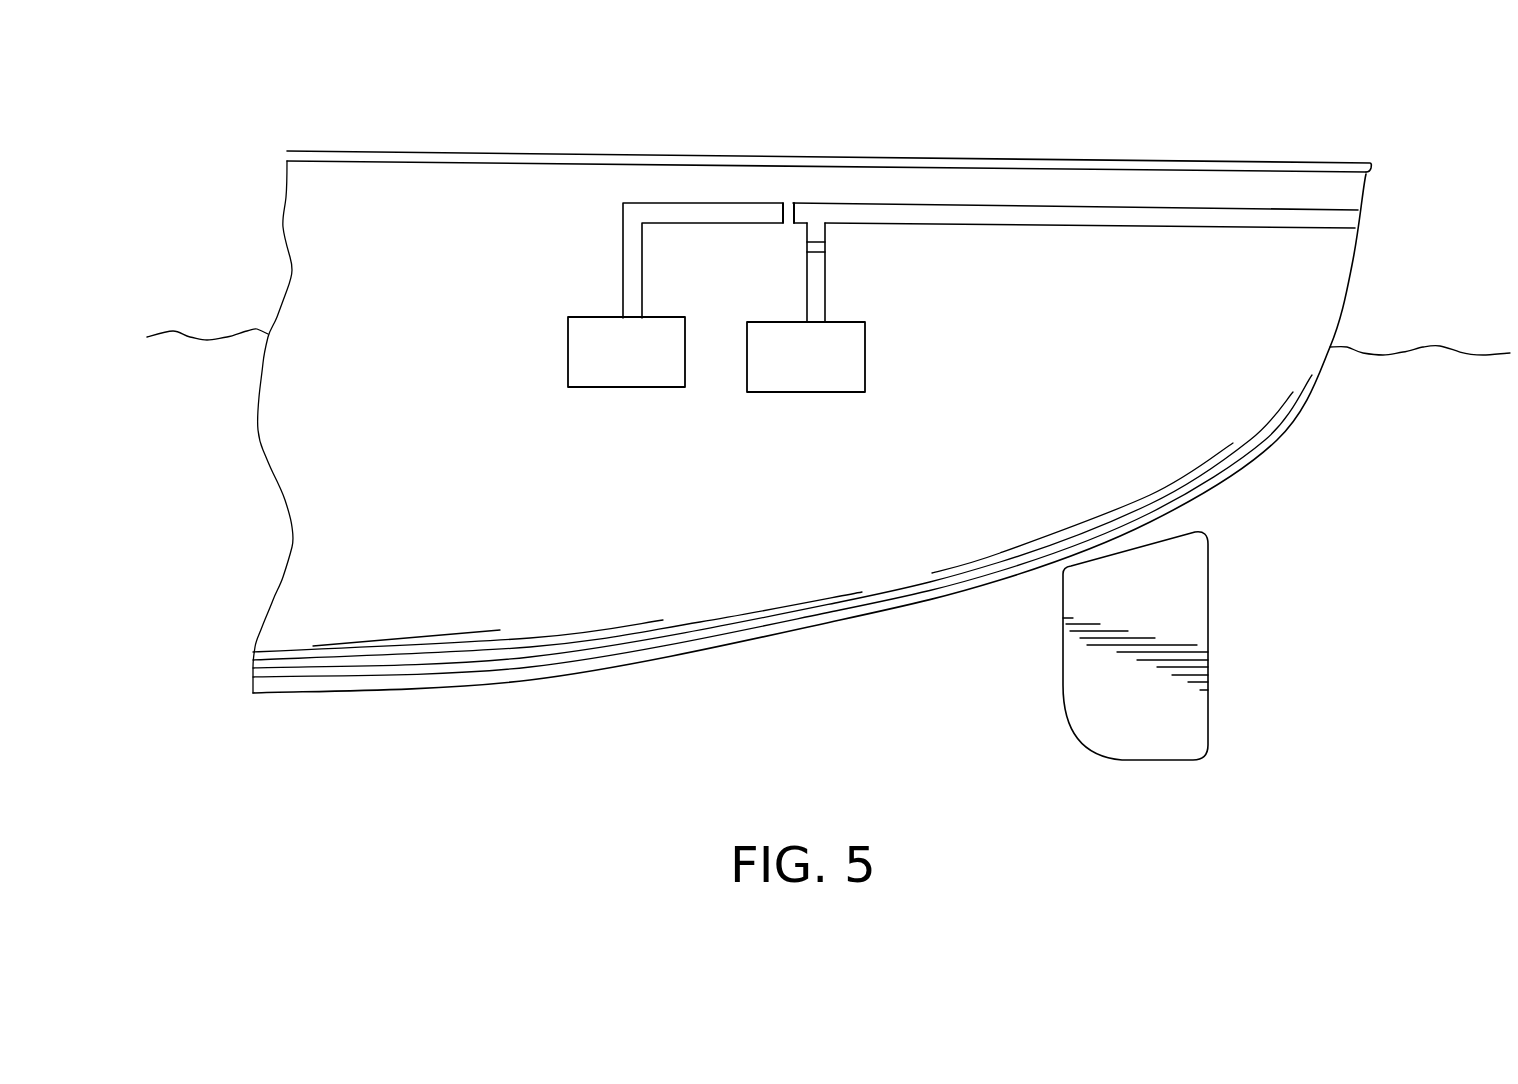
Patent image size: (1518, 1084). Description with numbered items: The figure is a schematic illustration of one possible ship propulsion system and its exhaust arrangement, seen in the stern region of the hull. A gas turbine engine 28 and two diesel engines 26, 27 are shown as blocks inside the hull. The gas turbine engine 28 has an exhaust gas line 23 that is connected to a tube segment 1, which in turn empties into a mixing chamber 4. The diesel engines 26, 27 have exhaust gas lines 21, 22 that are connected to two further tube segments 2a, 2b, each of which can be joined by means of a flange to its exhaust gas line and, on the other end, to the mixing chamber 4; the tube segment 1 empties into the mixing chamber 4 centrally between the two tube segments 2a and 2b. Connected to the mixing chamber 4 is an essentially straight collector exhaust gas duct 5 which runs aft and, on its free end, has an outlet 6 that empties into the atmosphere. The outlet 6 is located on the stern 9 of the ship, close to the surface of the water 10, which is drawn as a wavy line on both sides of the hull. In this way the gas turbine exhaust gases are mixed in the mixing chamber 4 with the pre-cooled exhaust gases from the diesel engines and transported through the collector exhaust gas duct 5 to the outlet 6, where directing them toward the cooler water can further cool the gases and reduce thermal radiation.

The tube segment 1 is at (823, 236).
The tube segment 2a is at (766, 158).
The tube segment 2b is at (800, 207).
The mixing chamber 4 is at (857, 208).
The collector exhaust gas duct 5 is at (996, 199).
The outlet 6 is at (1357, 222).
The stern 9 is at (1370, 165).
The surface of the water 10 is at (1420, 353).
The exhaust gas line 21 is at (691, 208).
The exhaust gas line 22 is at (656, 207).
The exhaust gas line 23 is at (823, 293).
The diesel engine 26 is at (557, 352).
The diesel engine 27 is at (568, 357).
The gas turbine engine 28 is at (865, 366).